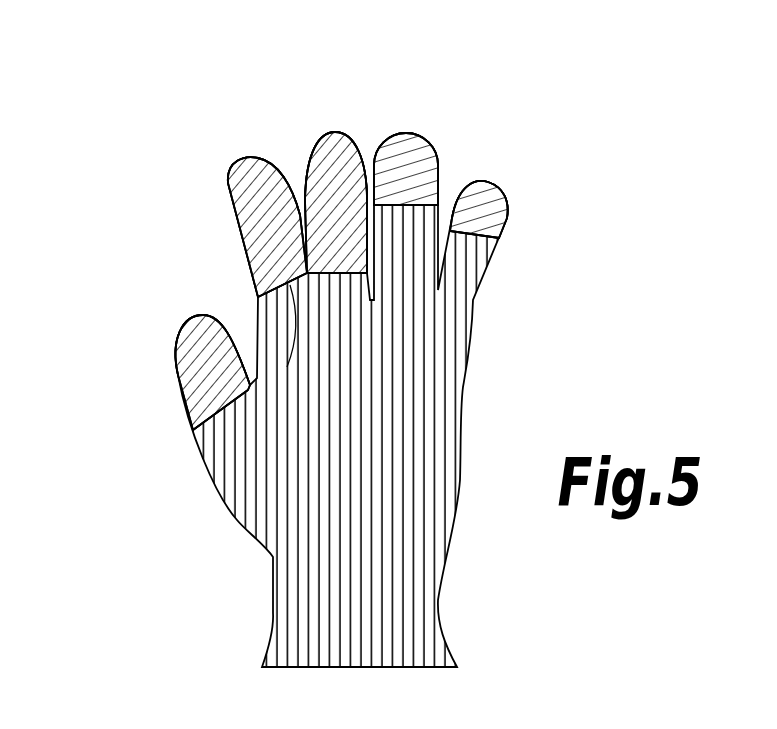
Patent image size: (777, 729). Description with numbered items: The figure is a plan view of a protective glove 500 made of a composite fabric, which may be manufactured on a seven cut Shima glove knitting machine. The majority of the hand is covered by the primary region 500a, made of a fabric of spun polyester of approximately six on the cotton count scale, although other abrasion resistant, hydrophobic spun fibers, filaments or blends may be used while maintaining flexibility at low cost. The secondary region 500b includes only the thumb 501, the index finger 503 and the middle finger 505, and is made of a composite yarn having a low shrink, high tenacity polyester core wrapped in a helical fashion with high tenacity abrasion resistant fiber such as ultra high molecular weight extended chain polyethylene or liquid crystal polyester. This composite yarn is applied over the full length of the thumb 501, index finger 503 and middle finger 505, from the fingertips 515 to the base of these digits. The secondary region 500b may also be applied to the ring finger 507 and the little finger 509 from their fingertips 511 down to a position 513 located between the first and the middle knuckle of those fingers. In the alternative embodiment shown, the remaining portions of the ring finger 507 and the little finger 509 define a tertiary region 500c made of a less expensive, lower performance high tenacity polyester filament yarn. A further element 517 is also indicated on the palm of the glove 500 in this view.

The glove 500 is at (150, 383).
The primary region 500a is at (420, 495).
The secondary region 500b is at (187, 337).
The tertiary region 500c is at (413, 168).
The thumb 501 is at (175, 333).
The index finger 503 is at (272, 155).
The middle finger 505 is at (358, 147).
The ring finger 507 is at (414, 134).
The little finger 509 is at (508, 210).
The fingertips 511 is at (416, 132).
The position 513 is at (403, 213).
The fingertips 515 is at (326, 140).
The palm seam 517 is at (292, 347).